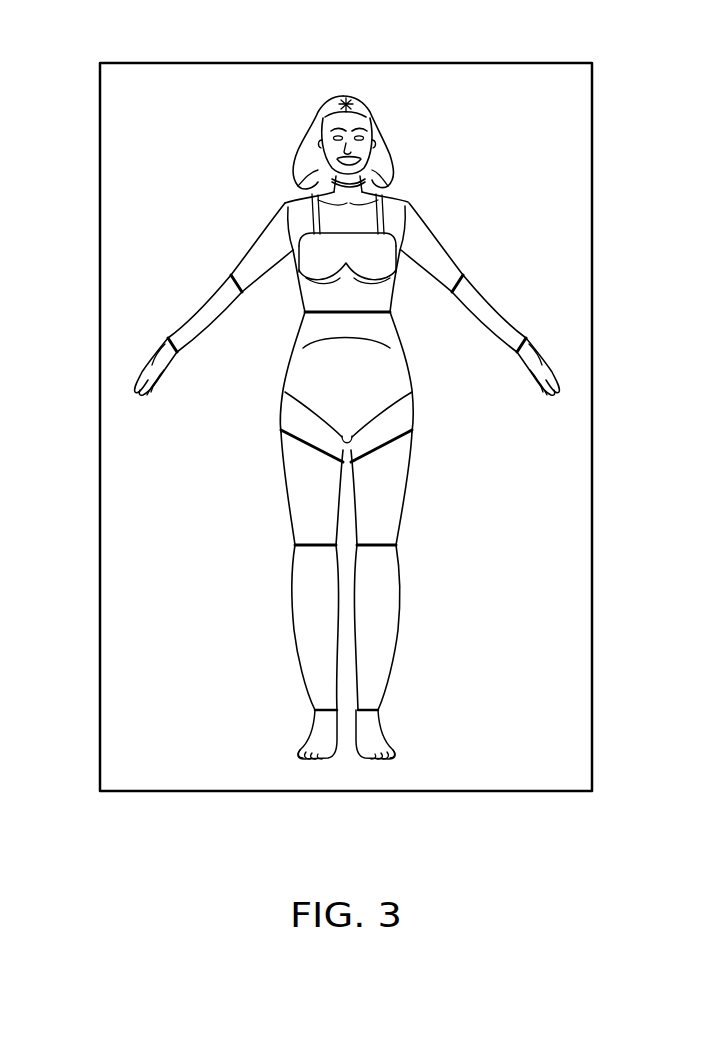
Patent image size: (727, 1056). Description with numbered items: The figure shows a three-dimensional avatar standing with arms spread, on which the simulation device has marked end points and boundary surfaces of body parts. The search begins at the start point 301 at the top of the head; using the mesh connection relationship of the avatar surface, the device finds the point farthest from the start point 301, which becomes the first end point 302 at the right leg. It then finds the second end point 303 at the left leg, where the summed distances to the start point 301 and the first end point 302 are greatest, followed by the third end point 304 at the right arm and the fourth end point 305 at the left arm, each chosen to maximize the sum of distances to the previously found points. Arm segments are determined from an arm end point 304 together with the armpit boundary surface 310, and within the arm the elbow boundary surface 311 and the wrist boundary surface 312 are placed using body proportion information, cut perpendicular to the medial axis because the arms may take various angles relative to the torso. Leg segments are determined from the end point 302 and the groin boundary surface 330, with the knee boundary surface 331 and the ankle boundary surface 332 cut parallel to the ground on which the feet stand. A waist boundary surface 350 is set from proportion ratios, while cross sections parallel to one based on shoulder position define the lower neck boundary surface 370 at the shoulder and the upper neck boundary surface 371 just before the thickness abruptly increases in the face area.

The start point 301 is at (345, 96).
The upper neck boundary surface 371 is at (367, 168).
The lower neck boundary surface 370 is at (370, 181).
The armpit boundary surface 310 is at (285, 204).
The elbow boundary surface 311 is at (231, 276).
The wrist boundary surface 312 is at (170, 338).
The third end point 304 is at (136, 380).
The fourth end point 305 is at (557, 383).
The waist boundary surface 350 is at (384, 313).
The groin boundary surface 330 is at (410, 431).
The knee boundary surface 331 is at (392, 546).
The ankle boundary surface 332 is at (376, 711).
The first end point 302 is at (298, 751).
The second end point 303 is at (394, 752).